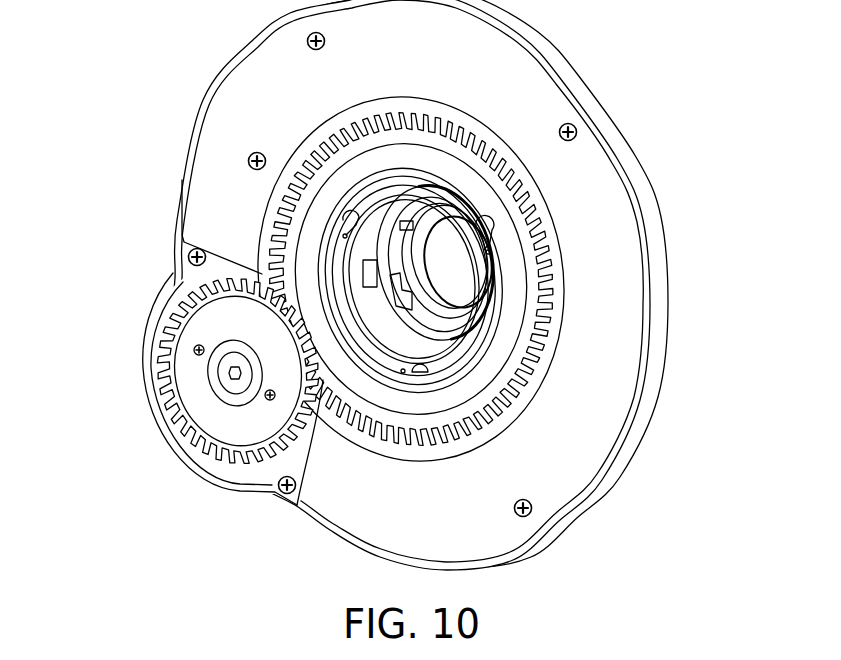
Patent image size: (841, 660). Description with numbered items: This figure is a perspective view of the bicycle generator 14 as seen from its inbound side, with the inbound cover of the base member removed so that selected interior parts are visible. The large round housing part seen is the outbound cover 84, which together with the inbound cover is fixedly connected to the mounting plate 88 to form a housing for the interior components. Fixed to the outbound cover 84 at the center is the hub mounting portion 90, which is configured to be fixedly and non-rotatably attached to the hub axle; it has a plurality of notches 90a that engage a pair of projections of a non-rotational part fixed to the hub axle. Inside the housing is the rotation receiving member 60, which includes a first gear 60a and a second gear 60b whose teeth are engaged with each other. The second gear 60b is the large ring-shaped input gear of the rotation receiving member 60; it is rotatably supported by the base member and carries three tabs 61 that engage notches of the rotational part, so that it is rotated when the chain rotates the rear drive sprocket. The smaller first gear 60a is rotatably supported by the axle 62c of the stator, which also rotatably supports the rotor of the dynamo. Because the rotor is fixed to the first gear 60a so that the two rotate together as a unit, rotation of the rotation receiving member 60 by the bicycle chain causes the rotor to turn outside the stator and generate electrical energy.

The bicycle generator 14 is at (160, 62).
The rotation receiving member 60 is at (102, 176).
The first gear 60a is at (218, 321).
The second gear 60b is at (280, 230).
The tabs 61 is at (345, 220).
The axle 62c is at (236, 387).
The outbound cover 84 is at (655, 368).
The mounting plate 88 is at (625, 437).
The hub mounting portion 90 is at (435, 257).
The notches 90a is at (400, 297).